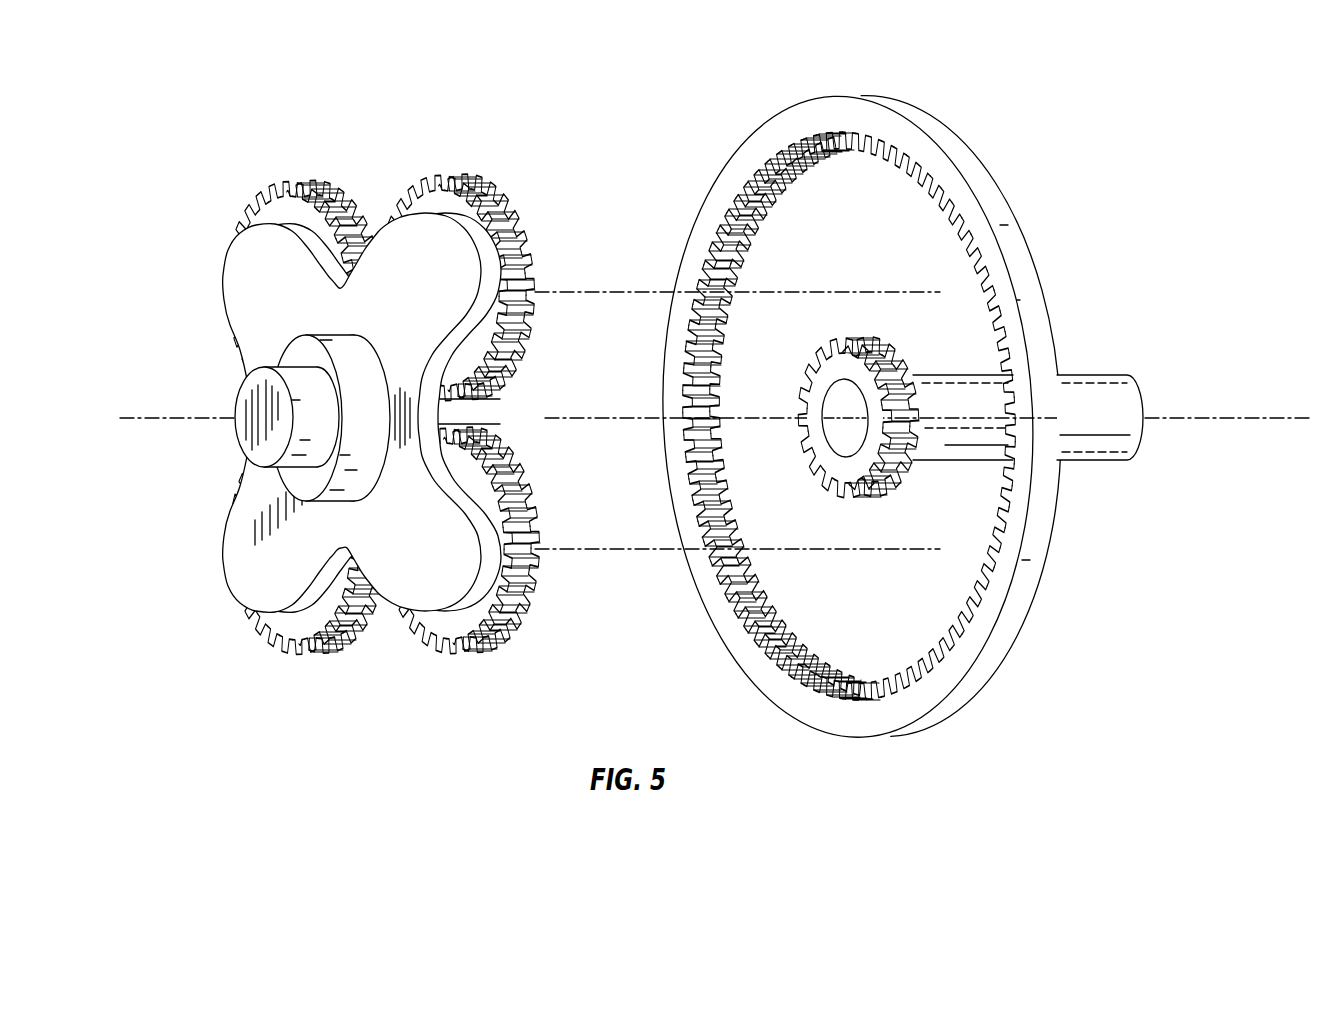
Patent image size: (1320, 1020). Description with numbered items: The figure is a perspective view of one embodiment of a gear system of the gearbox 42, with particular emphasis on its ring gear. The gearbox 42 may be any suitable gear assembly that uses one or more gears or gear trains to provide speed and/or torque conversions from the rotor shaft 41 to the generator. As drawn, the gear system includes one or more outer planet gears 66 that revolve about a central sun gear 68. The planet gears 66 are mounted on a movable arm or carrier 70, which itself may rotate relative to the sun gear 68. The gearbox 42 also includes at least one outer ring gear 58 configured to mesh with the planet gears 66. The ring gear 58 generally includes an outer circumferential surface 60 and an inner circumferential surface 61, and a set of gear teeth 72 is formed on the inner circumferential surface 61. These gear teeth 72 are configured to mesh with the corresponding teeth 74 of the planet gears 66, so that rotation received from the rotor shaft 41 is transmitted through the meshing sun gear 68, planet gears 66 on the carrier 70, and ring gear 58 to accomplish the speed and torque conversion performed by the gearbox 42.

The gearbox 42 is at (352, 417).
The planet gears 66 is at (404, 421).
The carrier 70 is at (232, 306).
The rotor shaft 41 is at (250, 410).
The teeth of the planet gears 74 is at (507, 392).
The ring gear 58 is at (769, 159).
The outer circumferential surface 60 is at (1000, 222).
The inner circumferential surface 61 is at (920, 177).
The gear teeth 72 is at (747, 232).
The sun gear 68 is at (823, 454).